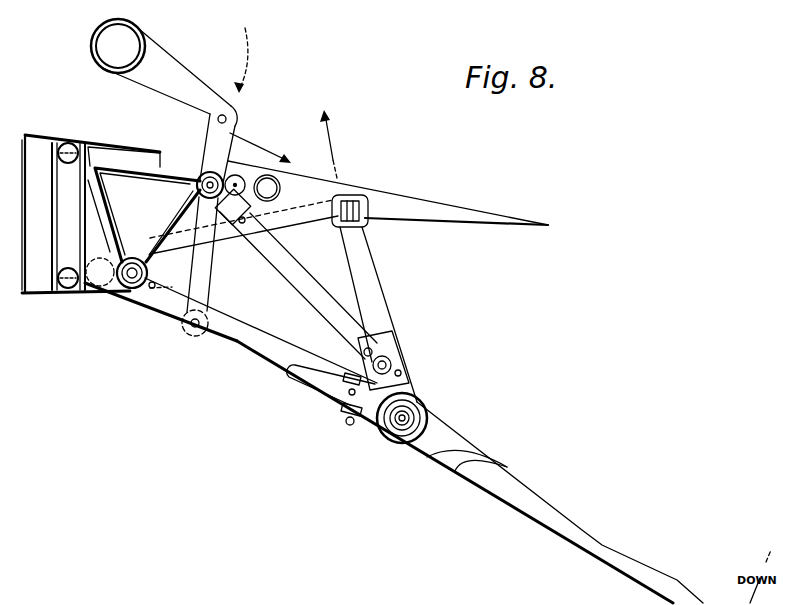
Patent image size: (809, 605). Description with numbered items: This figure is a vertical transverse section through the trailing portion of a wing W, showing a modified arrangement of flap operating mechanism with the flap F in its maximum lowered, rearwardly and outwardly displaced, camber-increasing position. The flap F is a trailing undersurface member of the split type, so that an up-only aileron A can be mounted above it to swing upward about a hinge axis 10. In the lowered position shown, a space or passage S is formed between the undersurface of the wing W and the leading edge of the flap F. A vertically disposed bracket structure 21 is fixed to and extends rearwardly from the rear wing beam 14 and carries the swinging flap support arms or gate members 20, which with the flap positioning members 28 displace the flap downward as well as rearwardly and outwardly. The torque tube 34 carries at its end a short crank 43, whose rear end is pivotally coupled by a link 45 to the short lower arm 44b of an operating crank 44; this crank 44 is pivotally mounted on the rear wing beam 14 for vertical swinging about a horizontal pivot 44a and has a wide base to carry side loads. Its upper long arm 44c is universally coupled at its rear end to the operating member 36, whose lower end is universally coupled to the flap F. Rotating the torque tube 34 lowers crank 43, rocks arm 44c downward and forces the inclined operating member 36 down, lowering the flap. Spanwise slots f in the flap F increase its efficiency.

The torque tube 34 is at (90, 44).
The crank 43 is at (180, 82).
The link 45 is at (228, 150).
The hinge axis 10 is at (236, 183).
The bracket structure 21 is at (118, 167).
The wing W is at (40, 135).
The rear wing beam 14 is at (48, 228).
The operating crank 44 is at (137, 316).
The pivot 44a is at (100, 291).
The short arm 44b is at (187, 331).
The long arm 44c is at (288, 222).
The flap positioning member 28 is at (302, 288).
The operating member 36 is at (377, 306).
The flap support arm 20 is at (260, 339).
The space or passage S is at (329, 397).
The slot f is at (333, 398).
The flap F is at (537, 497).
The aileron A is at (425, 207).